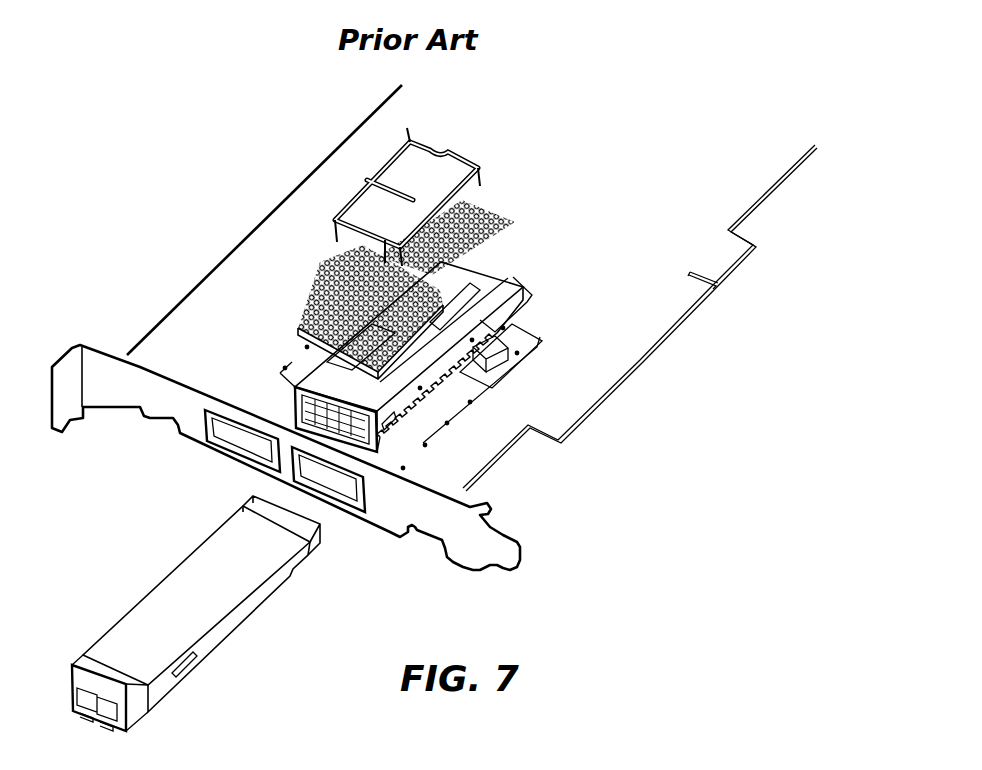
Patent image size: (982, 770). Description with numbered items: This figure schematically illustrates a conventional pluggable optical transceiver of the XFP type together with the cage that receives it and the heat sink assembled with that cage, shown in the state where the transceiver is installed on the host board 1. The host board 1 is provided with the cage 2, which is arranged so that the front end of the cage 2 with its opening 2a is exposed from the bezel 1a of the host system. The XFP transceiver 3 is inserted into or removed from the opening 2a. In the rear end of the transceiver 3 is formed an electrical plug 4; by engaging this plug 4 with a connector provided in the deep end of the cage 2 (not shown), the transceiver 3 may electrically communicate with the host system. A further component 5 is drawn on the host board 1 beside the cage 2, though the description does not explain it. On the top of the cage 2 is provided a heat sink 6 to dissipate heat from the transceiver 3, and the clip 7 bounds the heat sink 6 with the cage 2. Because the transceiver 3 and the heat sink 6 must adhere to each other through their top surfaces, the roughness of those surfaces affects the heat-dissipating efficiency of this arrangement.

The host board 1 is at (300, 200).
The bezel 1a is at (380, 513).
The cage 2 is at (401, 342).
The opening 2a is at (290, 385).
The XFP transceiver 3 is at (196, 601).
The electrical plug 4 is at (250, 503).
The connector 5 is at (520, 334).
The heat sink 6 is at (358, 288).
The clip 7 is at (478, 168).